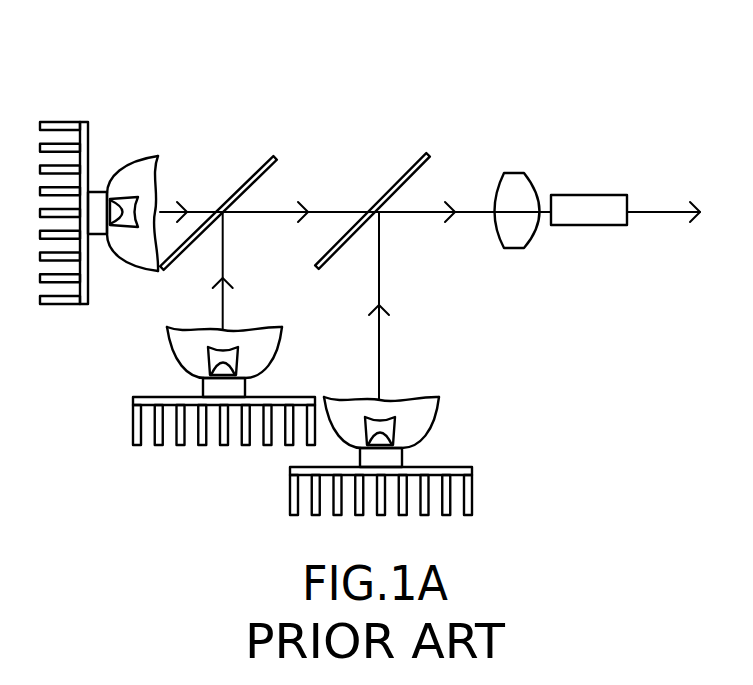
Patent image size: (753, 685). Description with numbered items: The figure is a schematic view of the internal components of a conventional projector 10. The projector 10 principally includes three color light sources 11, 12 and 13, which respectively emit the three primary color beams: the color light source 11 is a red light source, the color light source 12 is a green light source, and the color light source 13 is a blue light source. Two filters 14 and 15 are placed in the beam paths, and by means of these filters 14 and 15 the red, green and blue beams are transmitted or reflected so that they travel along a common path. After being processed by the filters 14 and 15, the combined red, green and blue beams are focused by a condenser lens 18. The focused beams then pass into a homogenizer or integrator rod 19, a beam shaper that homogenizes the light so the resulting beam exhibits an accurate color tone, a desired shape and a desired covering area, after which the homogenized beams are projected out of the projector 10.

The projector 10 is at (537, 67).
The color light source 11 is at (103, 152).
The color light source 12 is at (170, 380).
The color light source 13 is at (438, 453).
The filter 14 is at (272, 153).
The filter 15 is at (427, 153).
The condenser lens 18 is at (522, 192).
The integrator rod 19 is at (597, 205).